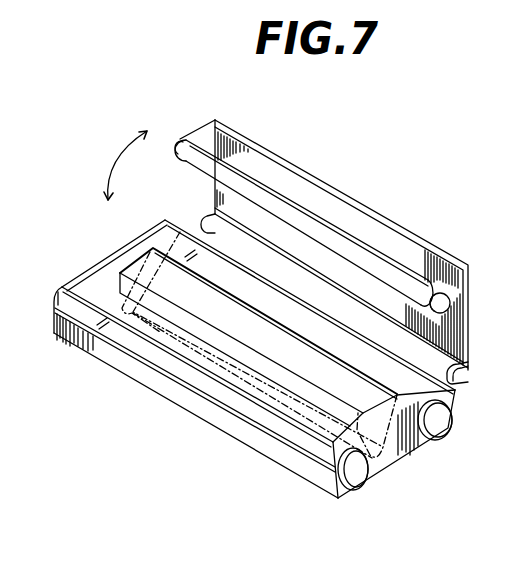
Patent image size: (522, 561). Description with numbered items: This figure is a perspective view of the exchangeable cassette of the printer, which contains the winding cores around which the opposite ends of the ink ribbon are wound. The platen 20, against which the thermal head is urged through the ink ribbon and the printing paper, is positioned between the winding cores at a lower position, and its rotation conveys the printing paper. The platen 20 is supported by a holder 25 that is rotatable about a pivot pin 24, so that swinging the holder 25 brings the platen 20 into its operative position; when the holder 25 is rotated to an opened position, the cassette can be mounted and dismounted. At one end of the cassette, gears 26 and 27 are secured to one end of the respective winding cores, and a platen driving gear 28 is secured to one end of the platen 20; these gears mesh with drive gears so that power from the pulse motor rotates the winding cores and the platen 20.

The platen 20 is at (312, 223).
The pivot pin 24 is at (466, 371).
The holder 25 is at (388, 219).
The gear 26 is at (437, 424).
The gear 27 is at (357, 473).
The platen driving gear 28 is at (451, 298).